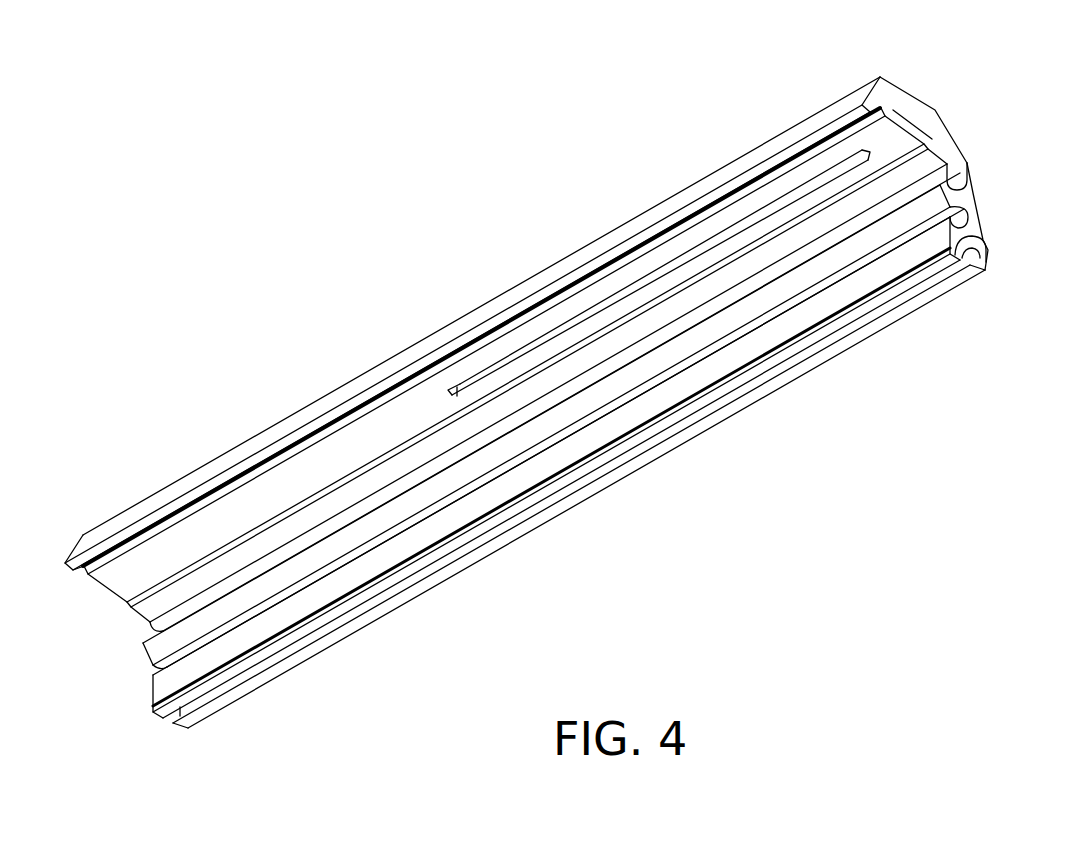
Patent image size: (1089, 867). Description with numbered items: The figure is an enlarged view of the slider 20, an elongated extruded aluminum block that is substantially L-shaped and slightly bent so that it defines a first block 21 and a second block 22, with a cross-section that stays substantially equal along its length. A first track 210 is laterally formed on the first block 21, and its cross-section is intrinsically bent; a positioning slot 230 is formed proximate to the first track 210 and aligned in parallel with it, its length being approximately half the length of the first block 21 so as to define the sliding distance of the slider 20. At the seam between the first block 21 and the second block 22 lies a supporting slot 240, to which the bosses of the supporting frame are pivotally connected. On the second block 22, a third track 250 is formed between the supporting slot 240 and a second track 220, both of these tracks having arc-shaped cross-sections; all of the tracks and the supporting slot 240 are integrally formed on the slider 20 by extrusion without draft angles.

The slider 20 is at (372, 245).
The first block 21 is at (922, 113).
The first track 210 is at (900, 91).
The second block 22 is at (972, 197).
The second track 220 is at (958, 238).
The positioning slot 230 is at (632, 290).
The supporting slot 240 is at (955, 172).
The third track 250 is at (960, 215).